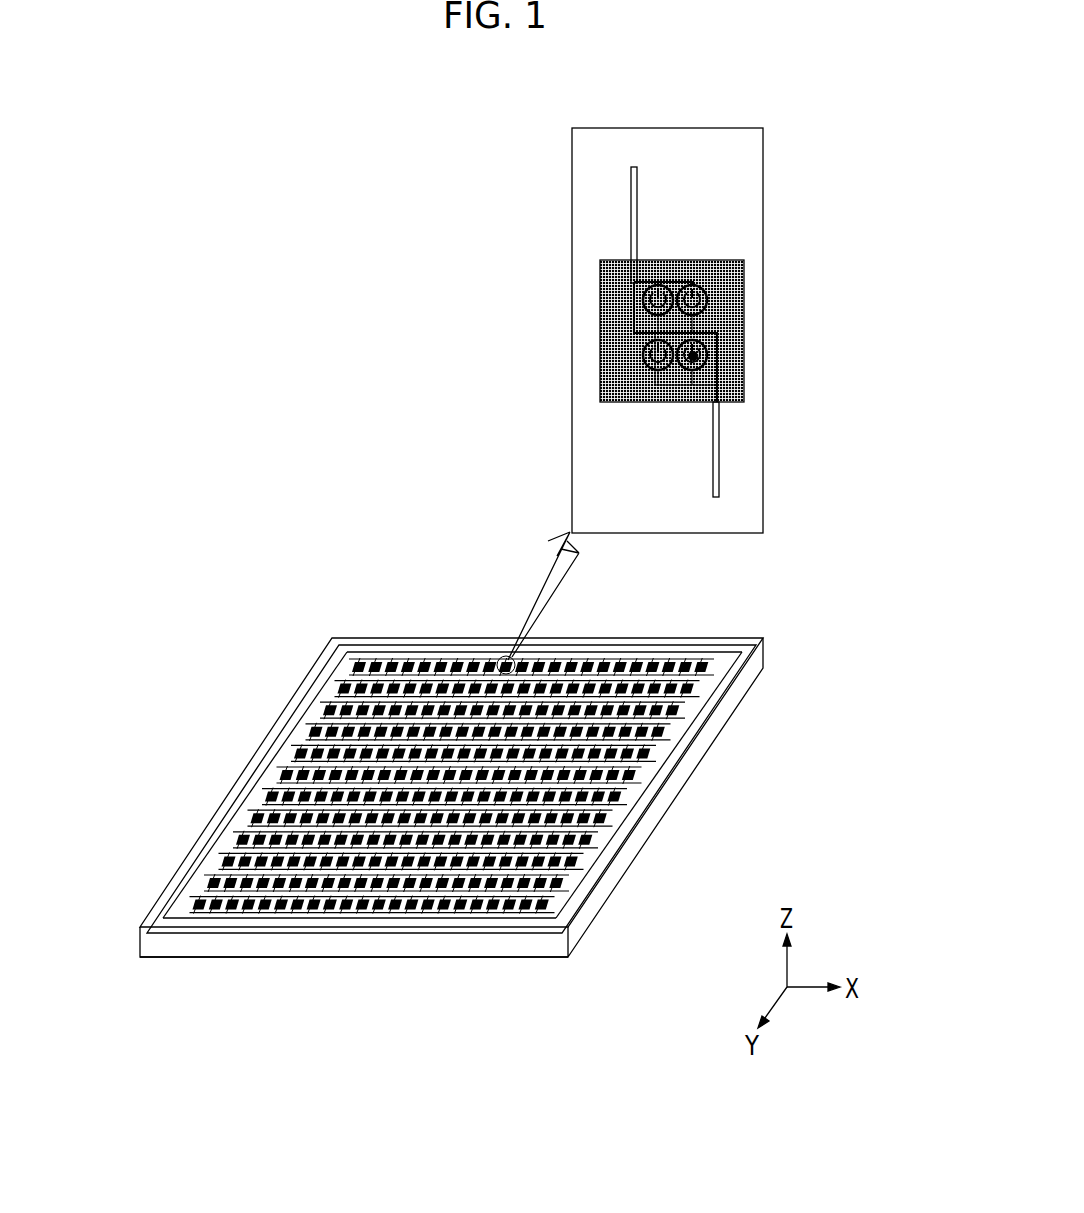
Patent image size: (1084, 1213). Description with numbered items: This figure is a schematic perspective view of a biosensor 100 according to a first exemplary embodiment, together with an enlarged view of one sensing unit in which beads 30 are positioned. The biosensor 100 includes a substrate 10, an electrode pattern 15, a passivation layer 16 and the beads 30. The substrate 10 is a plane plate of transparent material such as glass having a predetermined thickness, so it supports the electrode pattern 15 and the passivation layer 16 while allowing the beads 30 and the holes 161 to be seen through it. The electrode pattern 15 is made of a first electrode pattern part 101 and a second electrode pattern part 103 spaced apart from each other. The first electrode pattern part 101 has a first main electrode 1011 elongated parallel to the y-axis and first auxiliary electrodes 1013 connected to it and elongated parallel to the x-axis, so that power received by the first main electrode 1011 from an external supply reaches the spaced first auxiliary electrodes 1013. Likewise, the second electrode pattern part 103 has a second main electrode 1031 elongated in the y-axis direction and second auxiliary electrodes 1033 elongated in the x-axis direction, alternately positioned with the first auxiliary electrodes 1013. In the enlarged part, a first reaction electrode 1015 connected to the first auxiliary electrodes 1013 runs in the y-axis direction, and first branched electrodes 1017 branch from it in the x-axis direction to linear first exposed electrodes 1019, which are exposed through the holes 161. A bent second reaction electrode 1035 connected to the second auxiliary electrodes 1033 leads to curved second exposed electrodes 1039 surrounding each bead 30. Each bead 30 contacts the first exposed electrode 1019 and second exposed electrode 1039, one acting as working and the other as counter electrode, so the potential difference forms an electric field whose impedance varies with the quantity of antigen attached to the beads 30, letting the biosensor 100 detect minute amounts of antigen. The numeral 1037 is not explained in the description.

The substrate 10 is at (695, 773).
The electrode pattern 15 is at (288, 725).
The passivation layer 16 is at (470, 928).
The biosensor 100 is at (452, 597).
The first electrode pattern part 101 is at (235, 1018).
The first main electrode 1011 is at (162, 903).
The first auxiliary electrodes 1013 is at (178, 915).
The second electrode pattern part 103 is at (826, 583).
The second main electrode 1031 is at (735, 667).
The second auxiliary electrodes 1033 is at (742, 639).
The first reaction electrode 1015 is at (637, 186).
The first branched electrodes 1017 is at (670, 282).
The first exposed electrodes 1019 is at (643, 308).
The holes 161 is at (647, 296).
The second exposed electrodes 1039 is at (655, 318).
The beads 30 is at (707, 352).
The second reaction electrode 1035 is at (719, 450).
The fifth wiring 1037 is at (670, 390).